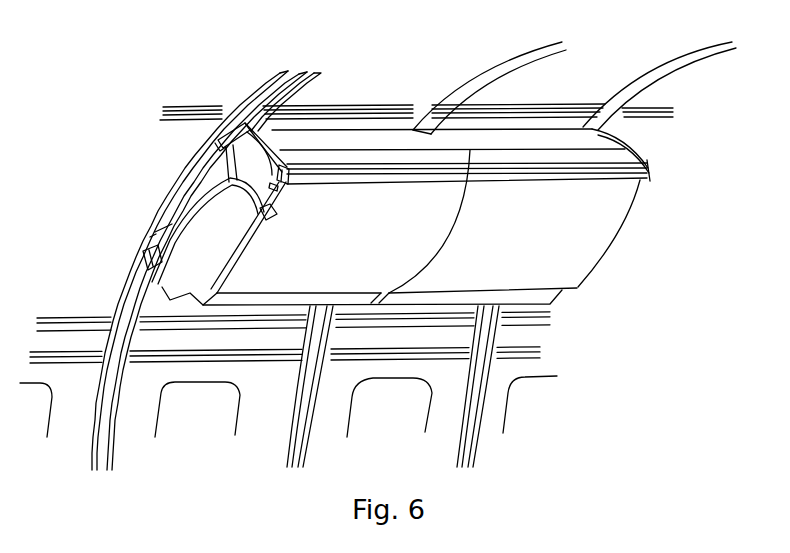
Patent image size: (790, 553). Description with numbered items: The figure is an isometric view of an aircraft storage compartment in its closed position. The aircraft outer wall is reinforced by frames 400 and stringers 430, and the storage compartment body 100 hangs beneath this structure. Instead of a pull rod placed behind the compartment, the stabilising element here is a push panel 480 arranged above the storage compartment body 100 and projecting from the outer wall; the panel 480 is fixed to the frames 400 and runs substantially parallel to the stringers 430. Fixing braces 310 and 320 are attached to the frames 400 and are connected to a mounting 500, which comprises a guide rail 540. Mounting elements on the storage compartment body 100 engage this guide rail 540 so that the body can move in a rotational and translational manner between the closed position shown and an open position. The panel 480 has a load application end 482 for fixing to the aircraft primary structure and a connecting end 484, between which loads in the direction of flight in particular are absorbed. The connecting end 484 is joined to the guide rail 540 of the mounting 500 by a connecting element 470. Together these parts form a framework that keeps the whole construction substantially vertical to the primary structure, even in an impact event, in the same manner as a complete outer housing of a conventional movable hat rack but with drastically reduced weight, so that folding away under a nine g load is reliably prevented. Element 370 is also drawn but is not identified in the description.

The storage compartment body 100 is at (570, 240).
The fixing brace 310 is at (147, 265).
The fixing brace 320 is at (208, 148).
The seal strip 370 is at (295, 97).
The frame 400 is at (473, 80).
The stringer 430 is at (660, 107).
The connecting element 470 is at (244, 130).
The push panel 480 is at (577, 142).
The load application end 482 is at (505, 102).
The connecting end 484 is at (287, 164).
The mounting 500 is at (186, 188).
The guide rail 540 is at (148, 216).